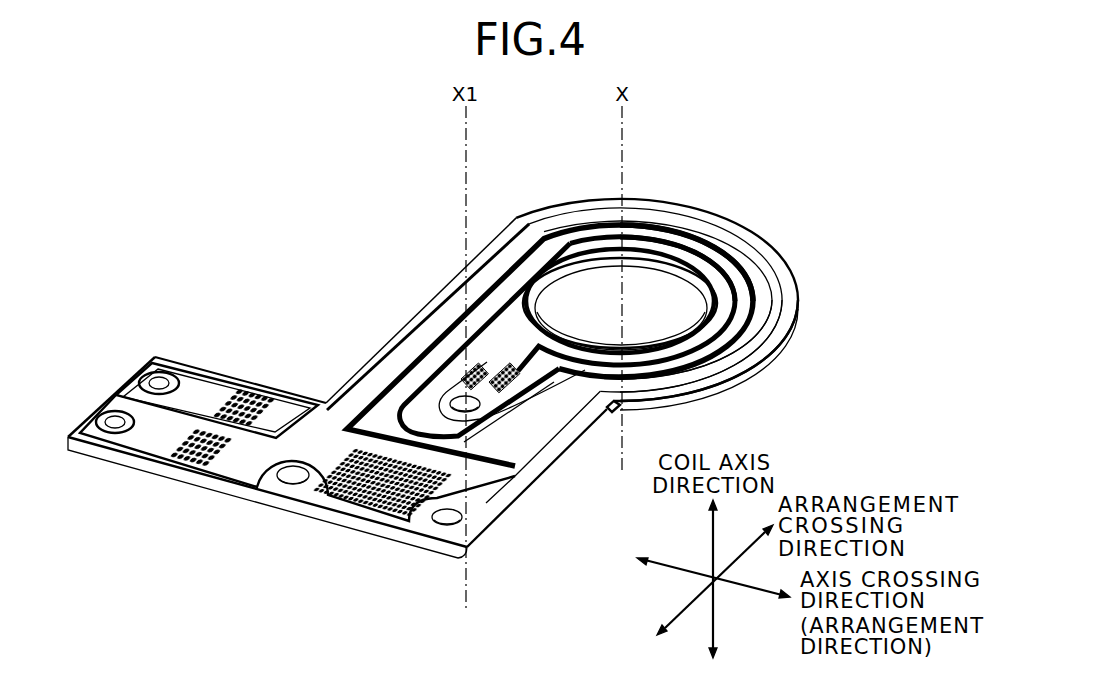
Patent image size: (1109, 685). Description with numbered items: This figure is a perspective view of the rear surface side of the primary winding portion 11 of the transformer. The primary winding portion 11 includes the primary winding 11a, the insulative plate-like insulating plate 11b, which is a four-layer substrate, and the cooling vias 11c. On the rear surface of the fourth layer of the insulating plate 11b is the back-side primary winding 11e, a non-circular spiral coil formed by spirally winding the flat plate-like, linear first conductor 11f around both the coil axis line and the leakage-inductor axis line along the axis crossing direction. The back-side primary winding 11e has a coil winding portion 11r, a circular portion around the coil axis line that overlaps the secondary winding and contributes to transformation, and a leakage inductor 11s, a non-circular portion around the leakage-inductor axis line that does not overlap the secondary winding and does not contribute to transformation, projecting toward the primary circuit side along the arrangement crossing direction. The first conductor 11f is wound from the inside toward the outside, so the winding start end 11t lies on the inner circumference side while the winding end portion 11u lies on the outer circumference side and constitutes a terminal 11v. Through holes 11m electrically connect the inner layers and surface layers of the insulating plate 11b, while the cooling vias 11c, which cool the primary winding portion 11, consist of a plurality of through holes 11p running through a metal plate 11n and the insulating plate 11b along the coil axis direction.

The primary winding portion 11 is at (692, 130).
The back-side primary winding 11e is at (723, 248).
The primary winding 11a is at (691, 235).
The first conductor 11f is at (718, 235).
The coil winding portion 11r is at (781, 265).
The insulating plate 11b is at (737, 352).
The through holes 11m is at (506, 365).
The winding start end 11t is at (529, 357).
The cooling vias 11c is at (347, 440).
The through holes 11p is at (234, 365).
The metal plate 11n is at (372, 425).
The winding end portion 11u is at (143, 437).
The terminal 11v is at (126, 482).
The leakage inductor 11s is at (530, 441).